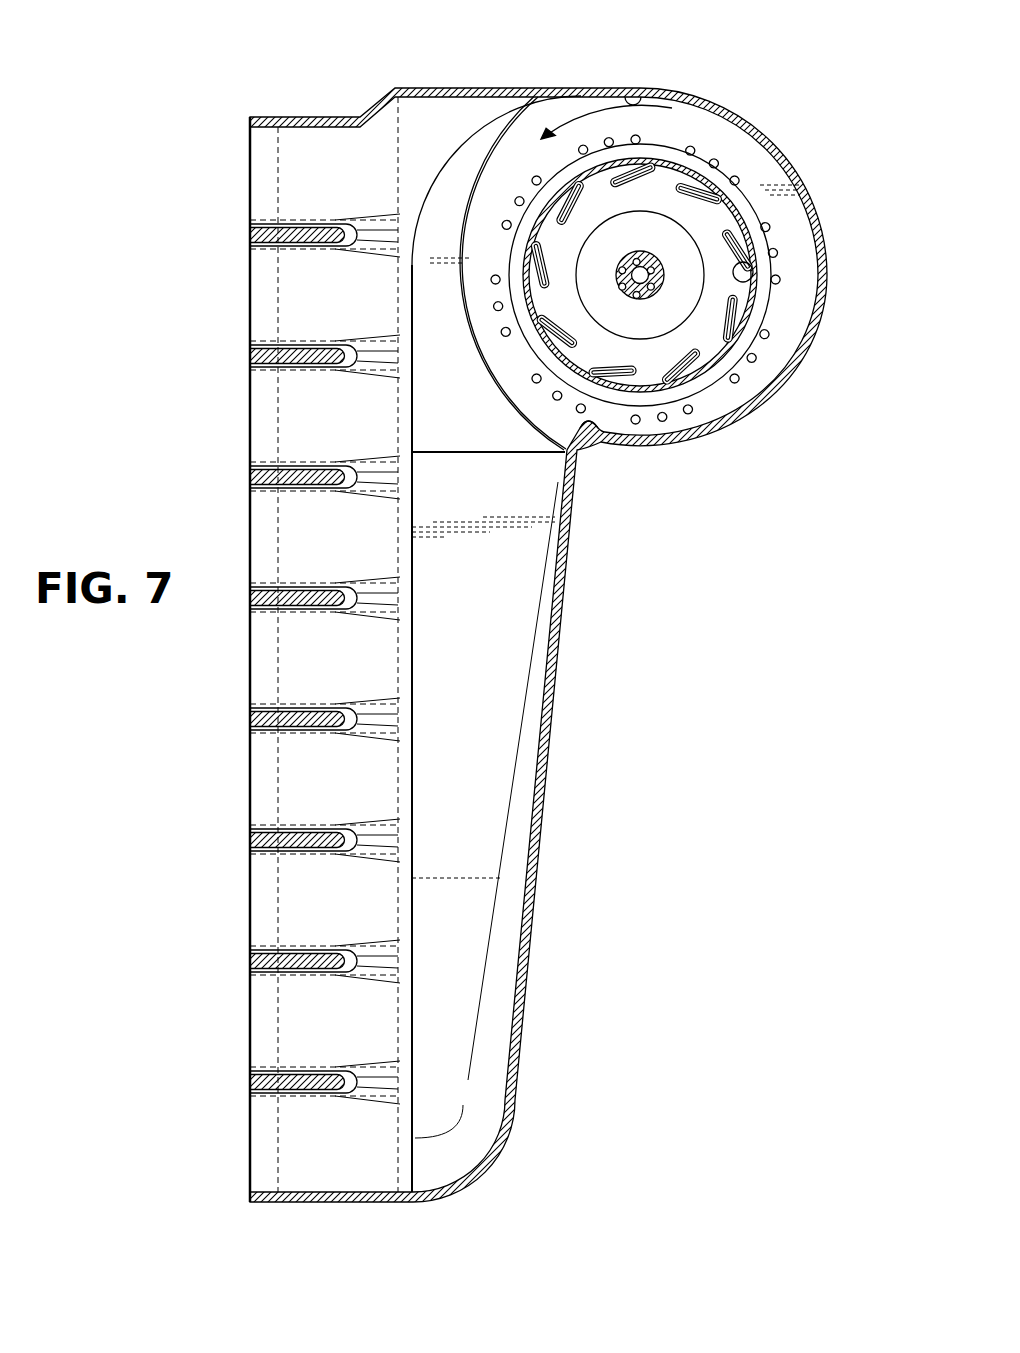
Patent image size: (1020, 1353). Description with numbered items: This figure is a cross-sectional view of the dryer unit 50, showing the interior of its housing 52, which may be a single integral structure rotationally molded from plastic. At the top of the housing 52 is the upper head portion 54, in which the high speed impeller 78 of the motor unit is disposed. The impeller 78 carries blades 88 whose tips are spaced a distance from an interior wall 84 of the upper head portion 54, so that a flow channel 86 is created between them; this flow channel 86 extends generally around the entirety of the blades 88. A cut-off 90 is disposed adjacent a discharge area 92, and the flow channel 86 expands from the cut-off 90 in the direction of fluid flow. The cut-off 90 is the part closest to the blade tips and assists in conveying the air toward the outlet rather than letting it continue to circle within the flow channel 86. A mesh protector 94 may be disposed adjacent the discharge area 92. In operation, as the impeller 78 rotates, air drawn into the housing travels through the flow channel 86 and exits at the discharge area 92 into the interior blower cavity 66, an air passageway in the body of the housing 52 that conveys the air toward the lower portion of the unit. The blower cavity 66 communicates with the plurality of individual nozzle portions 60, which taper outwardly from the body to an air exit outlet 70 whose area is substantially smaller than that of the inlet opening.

The dryer unit 50 is at (549, 56).
The housing 52 is at (552, 775).
The upper head portion 54 is at (797, 177).
The nozzle portions 60 is at (262, 1142).
The interior blower cavity 66 is at (512, 685).
The air exit outlet 70 is at (533, 430).
The impeller 78 is at (742, 222).
The interior wall 84 is at (648, 100).
The flow channel 86 is at (735, 142).
The blades 88 is at (757, 287).
The cut-off 90 is at (584, 437).
The discharge area 92 is at (498, 388).
The mesh protector 94 is at (508, 178).